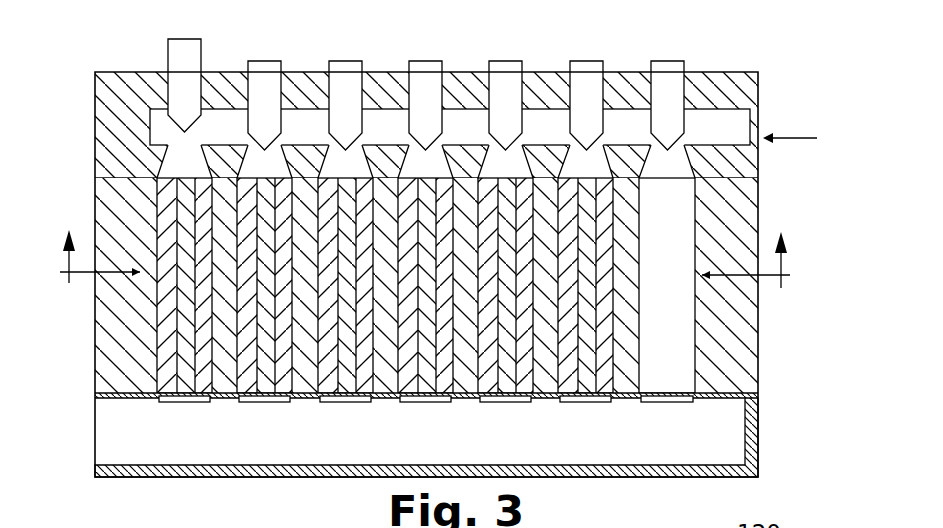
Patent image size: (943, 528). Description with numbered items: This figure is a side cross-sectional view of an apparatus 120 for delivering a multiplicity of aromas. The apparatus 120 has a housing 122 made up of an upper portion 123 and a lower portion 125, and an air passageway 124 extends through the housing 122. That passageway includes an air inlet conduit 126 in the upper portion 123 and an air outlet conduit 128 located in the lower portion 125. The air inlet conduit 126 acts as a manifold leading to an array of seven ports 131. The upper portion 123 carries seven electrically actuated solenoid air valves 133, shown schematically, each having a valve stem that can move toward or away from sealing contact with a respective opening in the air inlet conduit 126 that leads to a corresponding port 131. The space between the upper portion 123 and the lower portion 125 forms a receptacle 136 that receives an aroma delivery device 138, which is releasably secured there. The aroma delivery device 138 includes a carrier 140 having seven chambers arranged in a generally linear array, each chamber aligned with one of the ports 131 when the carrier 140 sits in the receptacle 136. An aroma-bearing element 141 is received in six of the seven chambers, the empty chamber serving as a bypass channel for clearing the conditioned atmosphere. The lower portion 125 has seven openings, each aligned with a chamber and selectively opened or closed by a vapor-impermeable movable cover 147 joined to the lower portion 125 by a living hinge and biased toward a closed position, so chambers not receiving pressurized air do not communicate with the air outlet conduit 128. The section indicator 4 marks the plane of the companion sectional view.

The apparatus 120 is at (672, 42).
The housing 122 is at (460, 88).
The upper portion 123 is at (740, 88).
The air passageway 124 is at (733, 113).
The lower portion 125 is at (758, 436).
The air inlet conduit 126 is at (758, 167).
The air outlet conduit 128 is at (540, 465).
The ports 131 is at (205, 160).
The solenoid air valves 133 is at (503, 65).
The receptacle 136 is at (757, 192).
The aroma delivery device 138 is at (762, 357).
The carrier 140 is at (737, 378).
The aroma-bearing element 141 is at (165, 370).
The movable cover 147 is at (253, 422).
The section line 4- 4 is at (428, 263).